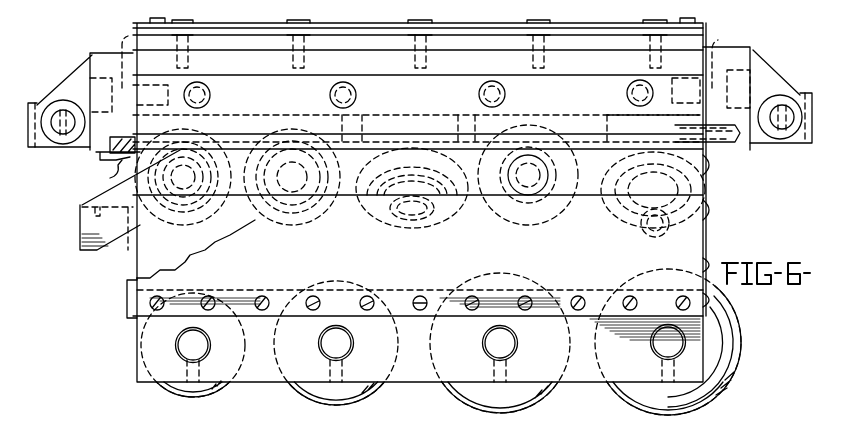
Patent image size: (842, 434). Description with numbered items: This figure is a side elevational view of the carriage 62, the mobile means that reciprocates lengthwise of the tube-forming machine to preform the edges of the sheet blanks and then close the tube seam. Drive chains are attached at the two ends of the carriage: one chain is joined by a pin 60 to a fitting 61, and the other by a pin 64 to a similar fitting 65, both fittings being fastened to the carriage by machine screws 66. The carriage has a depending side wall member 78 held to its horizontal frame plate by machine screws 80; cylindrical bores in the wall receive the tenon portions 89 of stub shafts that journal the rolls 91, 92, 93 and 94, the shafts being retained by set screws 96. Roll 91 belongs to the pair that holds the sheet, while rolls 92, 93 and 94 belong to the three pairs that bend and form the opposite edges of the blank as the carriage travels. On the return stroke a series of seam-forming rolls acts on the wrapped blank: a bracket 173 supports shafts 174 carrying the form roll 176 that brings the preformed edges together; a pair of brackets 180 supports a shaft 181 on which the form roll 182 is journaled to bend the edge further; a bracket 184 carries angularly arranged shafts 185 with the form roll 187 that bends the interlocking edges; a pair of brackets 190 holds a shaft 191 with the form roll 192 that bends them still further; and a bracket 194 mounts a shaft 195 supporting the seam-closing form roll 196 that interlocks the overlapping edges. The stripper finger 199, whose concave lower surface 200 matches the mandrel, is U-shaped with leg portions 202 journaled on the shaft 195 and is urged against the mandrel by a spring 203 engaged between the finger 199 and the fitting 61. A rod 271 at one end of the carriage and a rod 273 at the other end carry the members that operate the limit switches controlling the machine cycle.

The pin 60 is at (66, 128).
The fitting 61 is at (92, 56).
The carriage 62 is at (121, 274).
The pin 64 is at (780, 125).
The fitting 65 is at (760, 60).
The machine screws 66 is at (424, 58).
The side wall member 78 is at (588, 380).
The machine screws 80 is at (208, 93).
The tenon portions 89 is at (203, 350).
The roll 91 is at (212, 390).
The form roll 92 is at (368, 390).
The form roll 93 is at (545, 389).
The form roll 94 is at (712, 392).
The set screws 96 is at (200, 373).
The bracket 173 is at (618, 118).
The shafts 174 is at (656, 234).
The form roll 176 is at (712, 186).
The brackets 180 is at (565, 112).
The shaft 181 is at (532, 160).
The form roll 182 is at (600, 220).
The bracket 184 is at (433, 126).
The shafts 185 is at (405, 222).
The form roll 187 is at (443, 222).
The brackets 190 is at (327, 126).
The shaft 191 is at (292, 222).
The form roll 192 is at (322, 212).
The bracket 194 is at (216, 130).
The shaft 195 is at (218, 190).
The form roll 196 is at (183, 210).
The finger 199 is at (80, 229).
The lower surface 200 is at (80, 250).
The leg portions 202 is at (225, 238).
The spring 203 is at (100, 174).
The rod 271 is at (710, 145).
The rod 273 is at (128, 138).